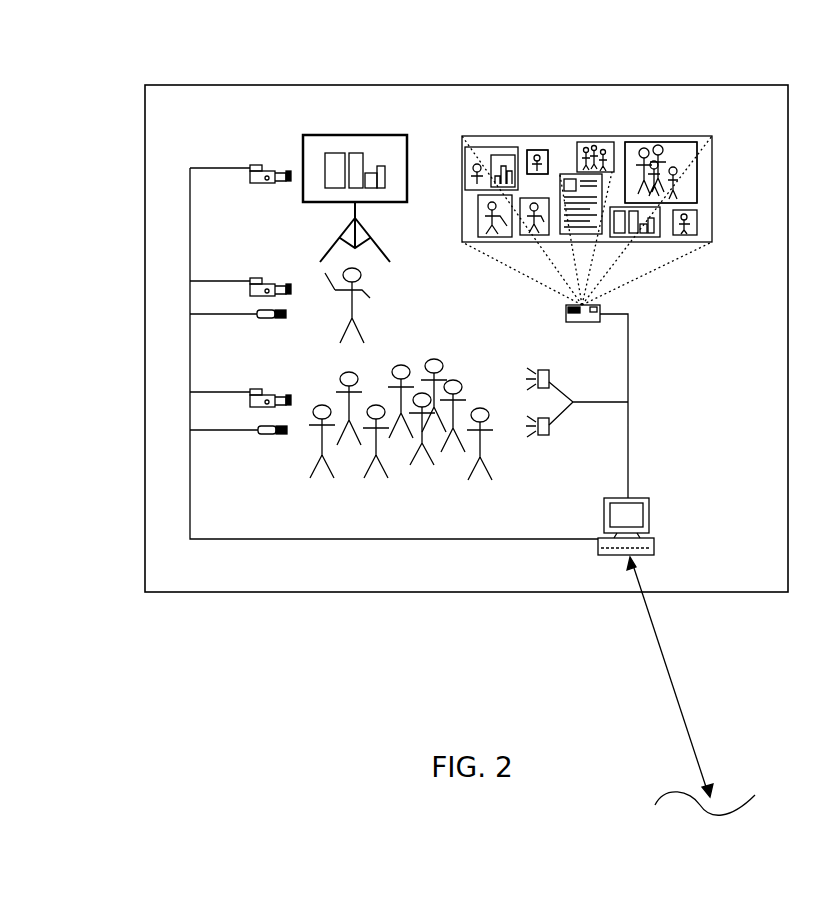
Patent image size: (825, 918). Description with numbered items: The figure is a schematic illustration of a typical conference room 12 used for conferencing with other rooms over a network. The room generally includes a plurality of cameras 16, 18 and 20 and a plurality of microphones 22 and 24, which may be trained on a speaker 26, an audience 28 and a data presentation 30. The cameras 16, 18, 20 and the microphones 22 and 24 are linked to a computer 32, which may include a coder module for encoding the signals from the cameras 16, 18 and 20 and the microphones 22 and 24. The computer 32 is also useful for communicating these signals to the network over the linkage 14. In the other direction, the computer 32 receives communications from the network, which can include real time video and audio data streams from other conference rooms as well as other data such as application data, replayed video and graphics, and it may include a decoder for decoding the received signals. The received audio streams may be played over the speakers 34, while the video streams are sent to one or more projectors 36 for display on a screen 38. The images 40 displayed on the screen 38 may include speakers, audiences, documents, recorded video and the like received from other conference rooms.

The conference room 12 is at (145, 218).
The linkage 14 is at (672, 683).
The camera 16 is at (252, 168).
The camera 18 is at (265, 280).
The camera 20 is at (265, 390).
The microphone 22 is at (258, 309).
The microphone 24 is at (259, 434).
The speaker 26 is at (355, 305).
The audience 28 is at (313, 508).
The data presentation 30 is at (355, 134).
The computer 32 is at (654, 548).
The speakers 34 is at (538, 368).
The projector 36 is at (596, 322).
The screen 38 is at (713, 147).
The images 40 is at (528, 150).